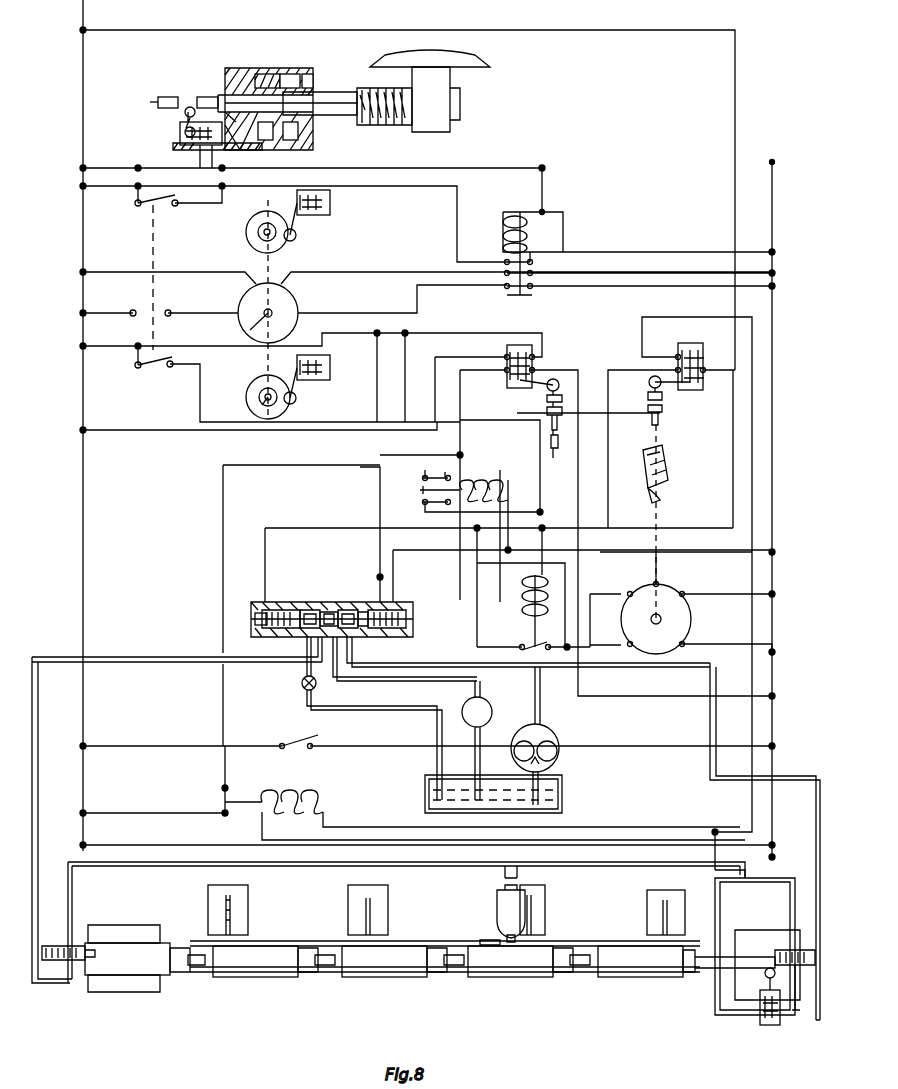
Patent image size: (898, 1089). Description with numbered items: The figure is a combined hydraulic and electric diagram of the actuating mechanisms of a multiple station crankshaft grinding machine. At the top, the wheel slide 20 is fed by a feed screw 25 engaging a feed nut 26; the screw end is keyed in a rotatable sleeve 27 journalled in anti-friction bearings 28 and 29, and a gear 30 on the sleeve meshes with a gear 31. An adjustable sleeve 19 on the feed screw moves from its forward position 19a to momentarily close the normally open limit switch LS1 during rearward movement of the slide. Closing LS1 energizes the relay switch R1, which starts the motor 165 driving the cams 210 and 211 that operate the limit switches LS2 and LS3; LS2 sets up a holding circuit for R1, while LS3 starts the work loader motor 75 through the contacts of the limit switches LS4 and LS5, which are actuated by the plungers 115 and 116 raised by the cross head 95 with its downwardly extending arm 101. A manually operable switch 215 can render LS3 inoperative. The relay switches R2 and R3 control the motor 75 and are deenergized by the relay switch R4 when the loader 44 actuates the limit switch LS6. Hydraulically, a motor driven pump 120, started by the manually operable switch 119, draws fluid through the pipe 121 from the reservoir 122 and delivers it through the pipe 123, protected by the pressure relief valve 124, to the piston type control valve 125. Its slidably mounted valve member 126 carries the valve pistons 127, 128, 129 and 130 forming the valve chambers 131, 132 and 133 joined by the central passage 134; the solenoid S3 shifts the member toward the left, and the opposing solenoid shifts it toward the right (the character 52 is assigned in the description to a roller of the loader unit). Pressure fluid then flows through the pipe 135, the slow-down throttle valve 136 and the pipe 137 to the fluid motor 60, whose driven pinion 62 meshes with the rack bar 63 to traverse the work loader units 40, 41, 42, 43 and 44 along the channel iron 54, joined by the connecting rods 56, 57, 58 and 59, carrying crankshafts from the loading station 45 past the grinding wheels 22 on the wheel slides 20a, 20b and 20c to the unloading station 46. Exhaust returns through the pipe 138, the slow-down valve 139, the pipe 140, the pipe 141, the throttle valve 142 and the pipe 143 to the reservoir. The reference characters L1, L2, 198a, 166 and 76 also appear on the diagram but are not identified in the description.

The power line 1 L1 is at (72, 425).
The power line 2 L2 is at (767, 496).
The forward position of adjustable sleeve 19a is at (176, 97).
The adjustable sleeve 19 is at (210, 97).
The normally open limit switch LS1 is at (198, 137).
The anti-friction bearing 28 is at (236, 78).
The rotatable sleeve 27 is at (262, 74).
The gear 30 is at (288, 74).
The anti-friction bearing 29 is at (310, 74).
The gear 31 is at (278, 140).
The wheel slide 20 is at (487, 55).
The feed screw 25 is at (392, 120).
The feed nut 26 is at (432, 118).
The limit switch LS2 is at (330, 205).
The cam 198a is at (255, 237).
The cam 210 is at (280, 248).
The motor 165 is at (250, 310).
The cam follower 166 is at (250, 332).
The manually operable switch 215 is at (148, 370).
The cam 211 is at (258, 386).
The limit switch LS3 is at (330, 370).
The relay switch R1 is at (520, 208).
The limit switch LS4 is at (505, 390).
The plunger 115 is at (588, 432).
The limit switch LS5 is at (715, 404).
The plunger 116 is at (652, 430).
The cross head 95 is at (665, 450).
The downwardly extending arm 101 is at (668, 478).
The relay switch R2 is at (500, 480).
The relay switch R3 is at (522, 588).
The electric motor 75 is at (668, 595).
The motor shaft 76 is at (651, 619).
The piston type control valve 125 is at (250, 619).
The roller 52 is at (266, 604).
The solenoid S3 is at (398, 606).
The slidably mounted valve member 126 is at (288, 638).
The valve piston 127 is at (298, 602).
The valve piston 128 is at (327, 602).
The valve piston 129 is at (347, 602).
The valve piston 130 is at (365, 602).
The valve chamber 131 is at (308, 602).
The valve chamber 132 is at (329, 602).
The valve chamber 133 is at (352, 602).
The central passage 134 is at (348, 640).
The pipe 135 is at (420, 660).
The pipe 140 is at (140, 660).
The pipe 141 is at (304, 690).
The throttle valve 142 is at (300, 706).
The manually operable switch 119 is at (427, 733).
The pipe 143 is at (398, 715).
The pressure relief valve 124 is at (466, 706).
The pipe 123 is at (540, 694).
The motor driven fluid pump 120 is at (559, 735).
The pipe 121 is at (560, 770).
The reservoir 122 is at (562, 800).
The relay switch R4 is at (427, 795).
The pipe 138 is at (308, 868).
The normally open slow-down valve 139 is at (62, 946).
The loading station 45 is at (113, 925).
The work loader unit 40 is at (124, 987).
The work loader unit 41 is at (255, 988).
The work loader unit 42 is at (384, 988).
The work loader unit 43 is at (510, 988).
The work loader unit 44 is at (638, 988).
The grinding wheel 22 is at (226, 898).
The wheel slide 20a is at (348, 918).
The wheel slide 20b is at (545, 916).
The wheel slide 20c is at (647, 925).
The fluid motor 60 is at (497, 904).
The driven pinion 62 is at (505, 938).
The rack bar 63 is at (478, 940).
The connecting rod 56 is at (198, 976).
The connecting rod 57 is at (318, 976).
The connecting rod 58 is at (450, 976).
The connecting rod 59 is at (572, 976).
The channel iron 54 is at (698, 975).
The unloading station 46 is at (748, 990).
The normally open limit switch LS6 is at (760, 1008).
The normally open slow-down throttle valve 136 is at (815, 1020).
The pipe 137 is at (752, 875).